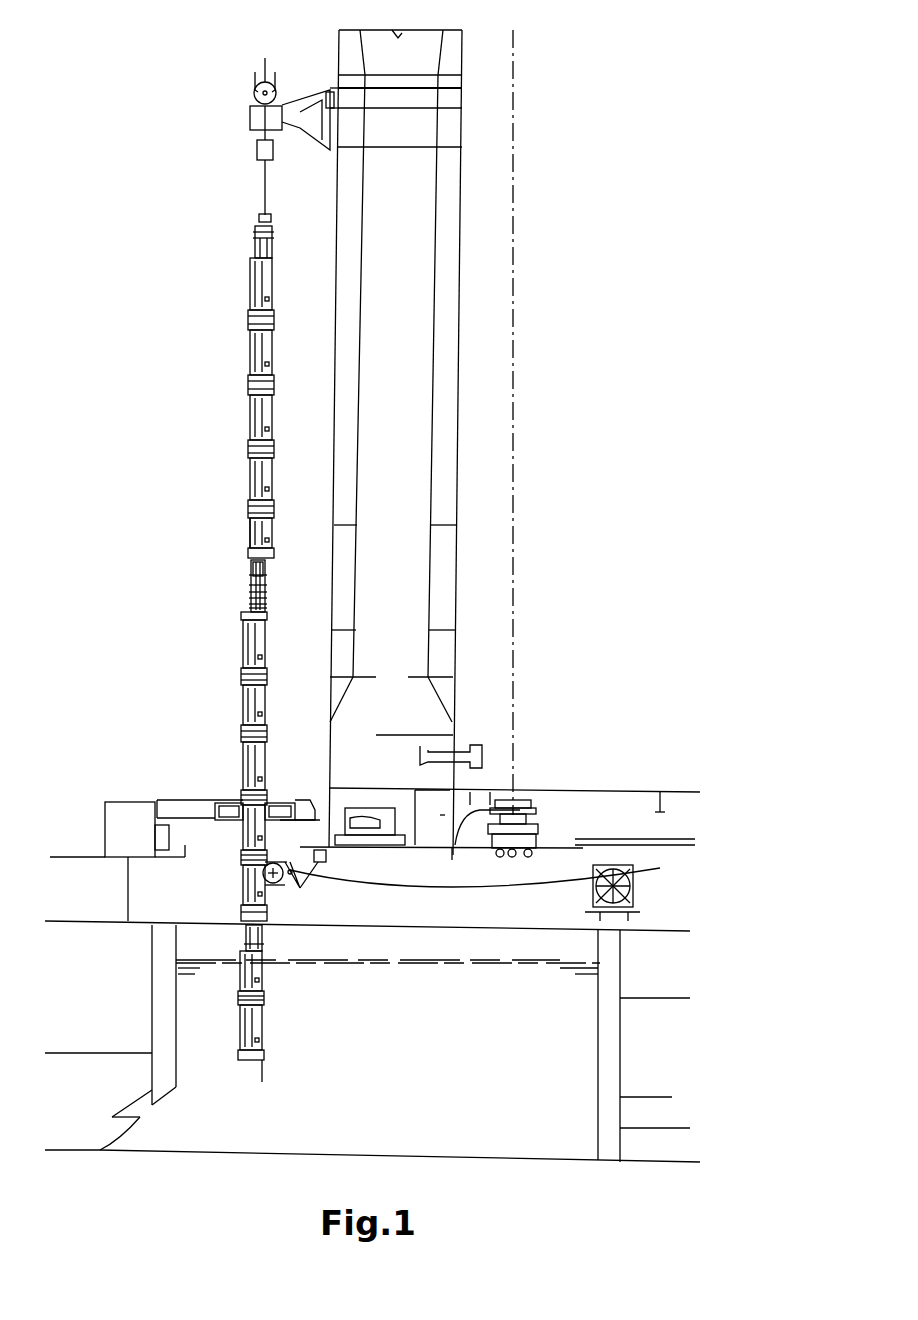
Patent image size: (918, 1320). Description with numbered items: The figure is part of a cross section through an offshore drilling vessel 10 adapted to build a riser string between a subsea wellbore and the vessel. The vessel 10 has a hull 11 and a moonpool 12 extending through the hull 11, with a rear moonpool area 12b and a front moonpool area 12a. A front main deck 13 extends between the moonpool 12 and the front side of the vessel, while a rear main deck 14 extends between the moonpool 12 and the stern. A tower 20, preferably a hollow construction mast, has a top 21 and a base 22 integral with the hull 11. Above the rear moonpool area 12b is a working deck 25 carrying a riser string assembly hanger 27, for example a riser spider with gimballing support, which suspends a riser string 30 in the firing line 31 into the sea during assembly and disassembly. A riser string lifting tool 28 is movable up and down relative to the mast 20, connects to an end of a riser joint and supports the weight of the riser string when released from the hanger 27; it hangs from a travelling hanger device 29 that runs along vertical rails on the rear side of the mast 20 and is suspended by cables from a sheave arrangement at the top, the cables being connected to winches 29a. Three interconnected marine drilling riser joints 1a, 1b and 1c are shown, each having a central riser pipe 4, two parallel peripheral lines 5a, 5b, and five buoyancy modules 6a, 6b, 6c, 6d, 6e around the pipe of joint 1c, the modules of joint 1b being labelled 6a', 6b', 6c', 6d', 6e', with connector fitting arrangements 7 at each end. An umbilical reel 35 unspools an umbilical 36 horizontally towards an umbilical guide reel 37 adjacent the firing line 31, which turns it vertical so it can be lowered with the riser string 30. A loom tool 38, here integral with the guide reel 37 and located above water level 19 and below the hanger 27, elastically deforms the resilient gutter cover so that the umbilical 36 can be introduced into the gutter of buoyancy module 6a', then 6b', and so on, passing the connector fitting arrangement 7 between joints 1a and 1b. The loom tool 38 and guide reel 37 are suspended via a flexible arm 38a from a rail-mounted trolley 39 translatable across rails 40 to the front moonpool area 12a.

The marine drilling riser joint 1a is at (274, 1029).
The marine drilling riser joint 1b is at (225, 766).
The marine drilling riser joint 1c is at (234, 408).
The riser pipe 4 is at (251, 570).
The peripheral line 5a is at (251, 594).
The peripheral line 5b is at (251, 607).
The buoyancy module 6a is at (285, 527).
The buoyancy module 6b is at (285, 474).
The buoyancy module 6c is at (284, 416).
The buoyancy module 6d is at (287, 352).
The buoyancy module 6e is at (286, 284).
The buoyancy module 6a' is at (271, 891).
The buoyancy module 6b' is at (271, 827).
The buoyancy module 6c' is at (282, 746).
The buoyancy module 6d' is at (279, 701).
The buoyancy module 6e' is at (276, 644).
The connector fitting arrangement 7 is at (245, 245).
The offshore drilling vessel 10 is at (642, 578).
The hull 11 is at (98, 1015).
The moonpool 12 is at (388, 998).
The front moonpool area 12a is at (367, 1030).
The rear moonpool area 12b is at (372, 1126).
The front main deck 13 is at (500, 804).
The rear main deck 14 is at (117, 861).
The water level 19 is at (493, 963).
The tower 20 is at (405, 442).
The top 21 is at (452, 56).
The base 22 is at (433, 808).
The working deck 25 is at (185, 800).
The riser string assembly hanger 27 is at (282, 802).
The riser string lifting tool 28 is at (238, 152).
The travelling hanger device 29 is at (308, 85).
The winch 29a is at (372, 808).
The riser string 30 is at (238, 518).
The firing line 31 is at (250, 1030).
The umbilical reel 35 is at (633, 880).
The umbilical 36 is at (440, 892).
The umbilical guide reel 37 is at (262, 872).
The loom tool 38 is at (300, 888).
The flexible arm 38a is at (300, 880).
The rail-mounted trolley 39 is at (326, 857).
The rails 40 is at (452, 869).